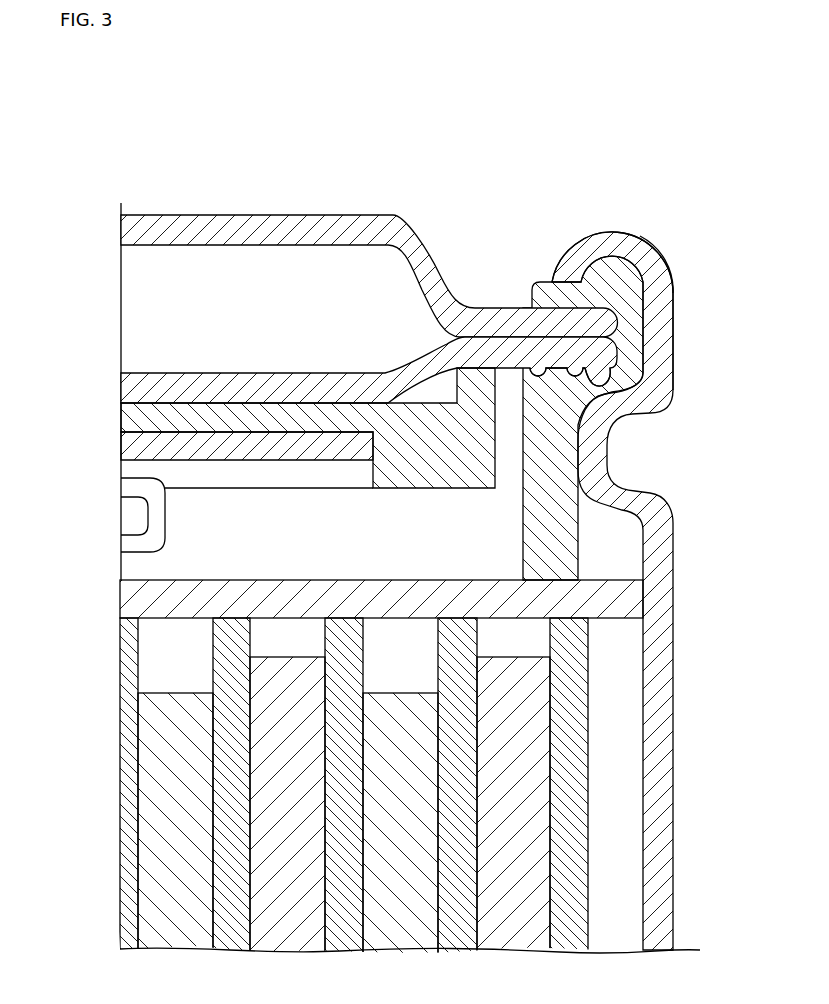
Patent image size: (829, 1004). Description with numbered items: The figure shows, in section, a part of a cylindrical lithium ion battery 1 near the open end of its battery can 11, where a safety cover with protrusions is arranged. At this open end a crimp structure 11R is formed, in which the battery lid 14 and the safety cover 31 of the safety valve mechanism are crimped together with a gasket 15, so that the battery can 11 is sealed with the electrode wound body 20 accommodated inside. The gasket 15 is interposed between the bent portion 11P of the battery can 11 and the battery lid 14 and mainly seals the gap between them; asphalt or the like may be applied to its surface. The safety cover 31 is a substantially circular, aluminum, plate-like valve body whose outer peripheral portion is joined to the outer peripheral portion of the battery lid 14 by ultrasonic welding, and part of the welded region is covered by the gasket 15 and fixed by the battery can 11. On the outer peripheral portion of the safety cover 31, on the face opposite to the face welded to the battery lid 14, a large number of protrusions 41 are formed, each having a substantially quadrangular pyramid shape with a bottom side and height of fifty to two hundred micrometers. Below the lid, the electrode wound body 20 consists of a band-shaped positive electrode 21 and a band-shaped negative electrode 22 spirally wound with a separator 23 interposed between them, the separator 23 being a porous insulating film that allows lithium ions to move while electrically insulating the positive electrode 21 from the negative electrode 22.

The lithium ion battery 1 is at (428, 109).
The battery can 11 is at (673, 673).
The bent portion 11P is at (624, 229).
The crimp structure 11R is at (680, 230).
The battery lid 14 is at (364, 214).
The gasket 15 is at (560, 544).
The electrode wound body 20 is at (425, 790).
The positive electrode 21 is at (422, 780).
The negative electrode 22 is at (533, 835).
The separator 23 is at (577, 888).
The safety cover 31 is at (280, 387).
The protrusion 41 is at (604, 387).